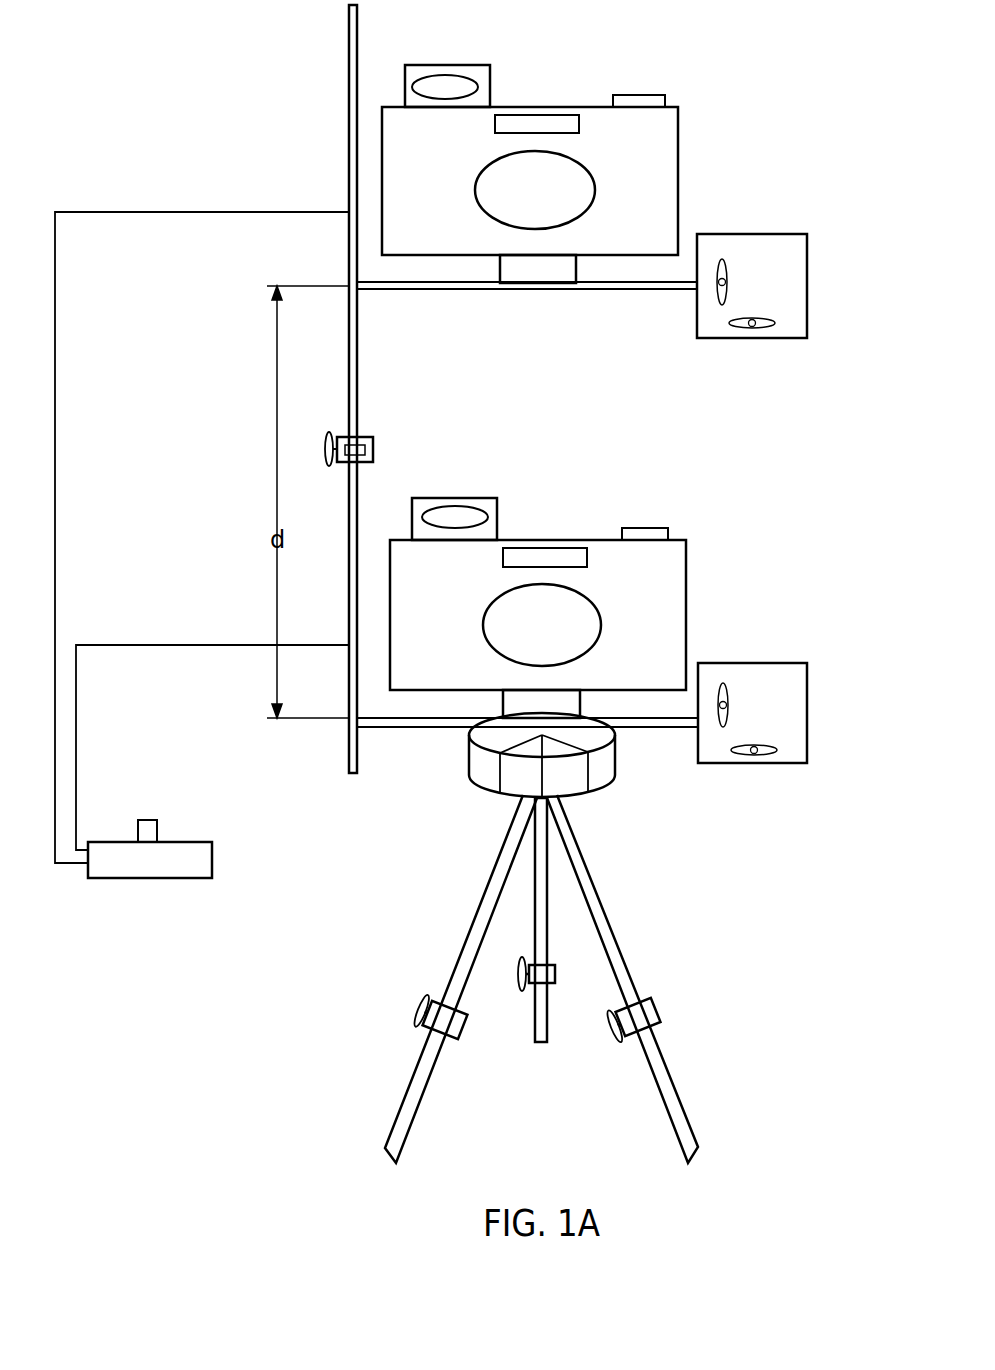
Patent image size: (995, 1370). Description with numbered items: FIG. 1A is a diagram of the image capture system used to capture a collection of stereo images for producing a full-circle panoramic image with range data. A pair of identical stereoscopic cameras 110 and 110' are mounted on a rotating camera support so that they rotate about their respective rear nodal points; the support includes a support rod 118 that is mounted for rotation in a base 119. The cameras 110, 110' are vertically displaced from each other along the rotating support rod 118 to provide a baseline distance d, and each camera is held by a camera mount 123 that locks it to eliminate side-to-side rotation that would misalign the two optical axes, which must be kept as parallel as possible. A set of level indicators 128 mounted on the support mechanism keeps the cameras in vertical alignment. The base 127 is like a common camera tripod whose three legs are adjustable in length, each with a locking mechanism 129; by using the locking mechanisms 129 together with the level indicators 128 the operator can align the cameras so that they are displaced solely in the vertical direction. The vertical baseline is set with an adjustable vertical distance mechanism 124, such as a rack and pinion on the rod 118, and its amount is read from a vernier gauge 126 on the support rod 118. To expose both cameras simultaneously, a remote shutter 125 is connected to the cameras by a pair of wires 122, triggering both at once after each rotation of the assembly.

The stereoscopic camera 110 is at (575, 160).
The stereoscopic camera 110' is at (580, 594).
The support rod 118 is at (349, 100).
The base 119 is at (620, 790).
The wires 122 is at (55, 484).
The camera mounts 123 is at (537, 270).
The adjustable vertical distance mechanism 124 is at (362, 440).
The remote shutter 125 is at (150, 880).
The vernier gauge 126 is at (325, 440).
The base 127 is at (675, 1093).
The level indicators 128 is at (807, 282).
The locking mechanism 129 is at (526, 975).